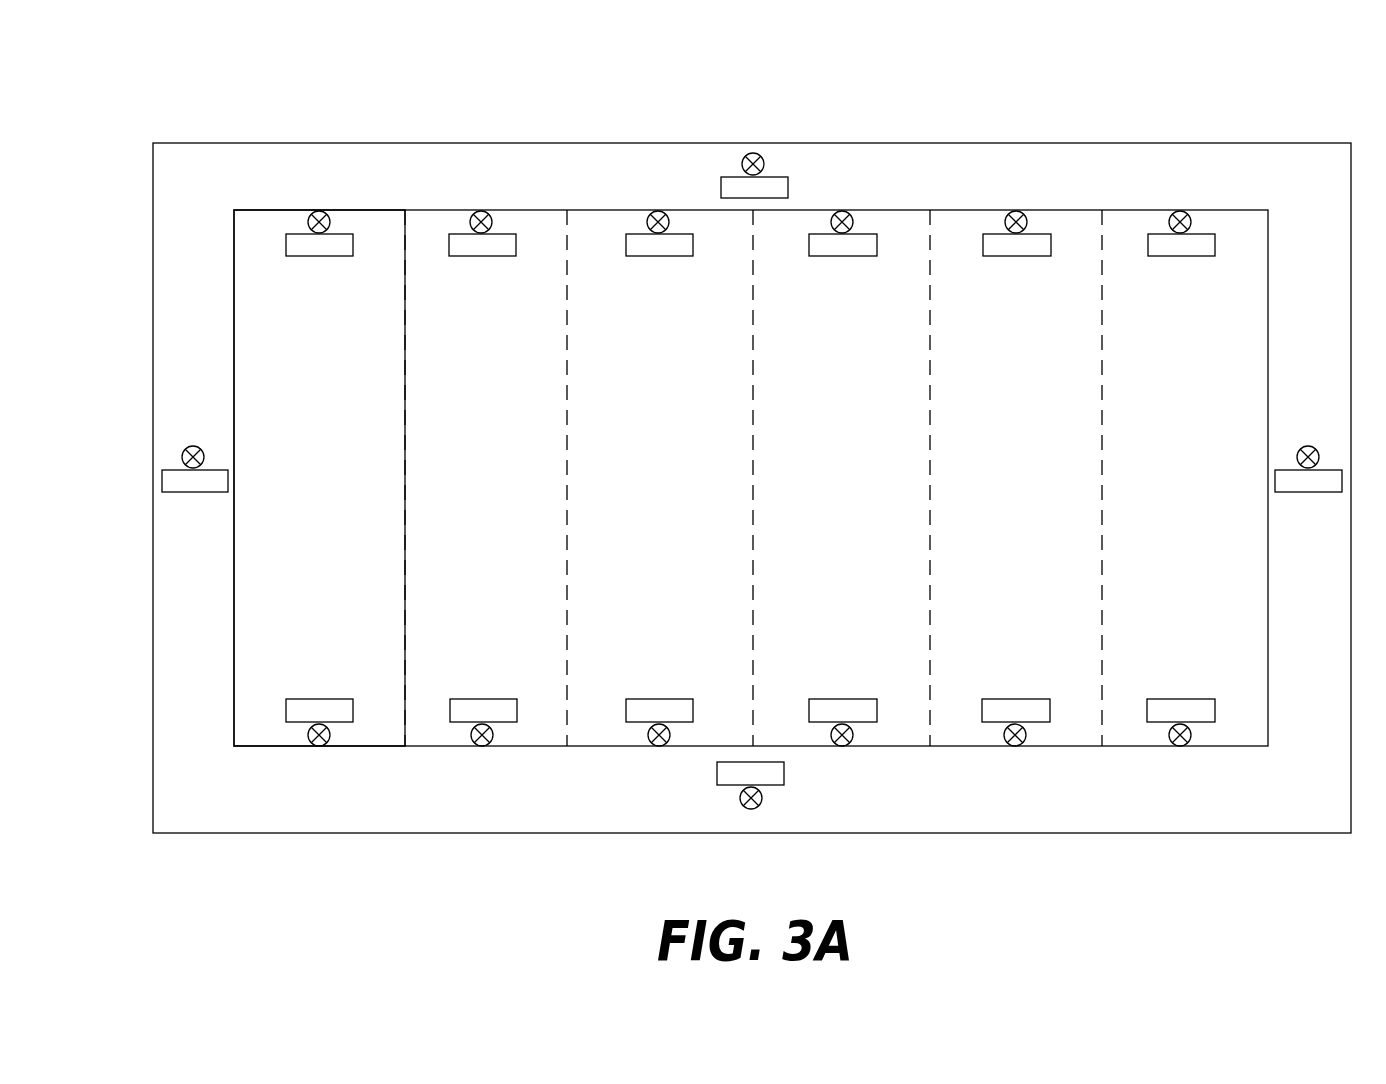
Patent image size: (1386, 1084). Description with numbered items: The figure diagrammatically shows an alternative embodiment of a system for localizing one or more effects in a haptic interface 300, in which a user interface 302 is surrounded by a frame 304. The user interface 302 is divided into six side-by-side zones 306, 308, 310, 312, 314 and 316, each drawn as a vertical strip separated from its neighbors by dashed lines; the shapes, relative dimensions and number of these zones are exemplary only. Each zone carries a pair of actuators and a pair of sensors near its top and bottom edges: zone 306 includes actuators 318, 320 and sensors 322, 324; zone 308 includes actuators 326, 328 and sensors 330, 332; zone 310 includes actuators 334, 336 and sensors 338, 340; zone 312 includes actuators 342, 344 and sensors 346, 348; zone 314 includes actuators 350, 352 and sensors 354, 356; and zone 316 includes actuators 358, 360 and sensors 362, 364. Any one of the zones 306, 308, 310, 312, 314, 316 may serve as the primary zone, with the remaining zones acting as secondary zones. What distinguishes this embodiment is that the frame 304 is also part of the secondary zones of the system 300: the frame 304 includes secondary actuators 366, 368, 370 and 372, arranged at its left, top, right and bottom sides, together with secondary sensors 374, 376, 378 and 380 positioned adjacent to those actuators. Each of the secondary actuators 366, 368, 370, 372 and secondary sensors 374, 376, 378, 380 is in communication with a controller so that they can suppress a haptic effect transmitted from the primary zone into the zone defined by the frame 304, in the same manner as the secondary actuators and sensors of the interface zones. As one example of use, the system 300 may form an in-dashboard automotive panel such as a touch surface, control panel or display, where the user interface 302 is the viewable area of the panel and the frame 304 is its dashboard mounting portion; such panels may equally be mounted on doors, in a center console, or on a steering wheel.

The system for localizing one or more effects in a haptic interface 300 is at (216, 110).
The user interface 302 is at (1245, 368).
The frame 304 is at (1310, 148).
The zone 306 is at (262, 235).
The zone 308 is at (438, 234).
The zone 310 is at (594, 234).
The zone 312 is at (897, 234).
The zone 314 is at (1075, 234).
The zone 316 is at (1240, 234).
The actuator 318 is at (287, 251).
The actuator 320 is at (354, 710).
The sensor 322 is at (330, 215).
The sensor 324 is at (317, 746).
The actuator 326 is at (470, 257).
The actuator 328 is at (520, 710).
The sensor 330 is at (492, 222).
The sensor 332 is at (481, 746).
The actuator 334 is at (694, 249).
The actuator 336 is at (695, 710).
The sensor 338 is at (650, 211).
The sensor 340 is at (655, 746).
The actuator 342 is at (878, 251).
The actuator 344 is at (878, 710).
The sensor 346 is at (840, 211).
The sensor 348 is at (846, 746).
The actuator 350 is at (1031, 257).
The actuator 352 is at (1051, 710).
The sensor 354 is at (1011, 211).
The sensor 356 is at (1012, 746).
The actuator 358 is at (1216, 250).
The actuator 360 is at (1216, 710).
The sensor 362 is at (1172, 211).
The sensor 364 is at (1178, 746).
The secondary actuator 366 is at (170, 493).
The secondary actuator 368 is at (721, 177).
The secondary actuator 370 is at (1283, 493).
The secondary actuator 372 is at (781, 786).
The secondary sensor 374 is at (185, 449).
The secondary sensor 376 is at (763, 160).
The secondary sensor 378 is at (1316, 449).
The secondary sensor 380 is at (748, 810).